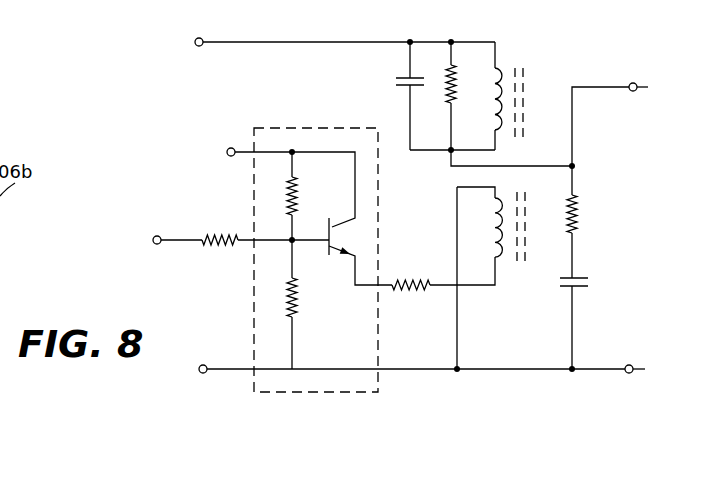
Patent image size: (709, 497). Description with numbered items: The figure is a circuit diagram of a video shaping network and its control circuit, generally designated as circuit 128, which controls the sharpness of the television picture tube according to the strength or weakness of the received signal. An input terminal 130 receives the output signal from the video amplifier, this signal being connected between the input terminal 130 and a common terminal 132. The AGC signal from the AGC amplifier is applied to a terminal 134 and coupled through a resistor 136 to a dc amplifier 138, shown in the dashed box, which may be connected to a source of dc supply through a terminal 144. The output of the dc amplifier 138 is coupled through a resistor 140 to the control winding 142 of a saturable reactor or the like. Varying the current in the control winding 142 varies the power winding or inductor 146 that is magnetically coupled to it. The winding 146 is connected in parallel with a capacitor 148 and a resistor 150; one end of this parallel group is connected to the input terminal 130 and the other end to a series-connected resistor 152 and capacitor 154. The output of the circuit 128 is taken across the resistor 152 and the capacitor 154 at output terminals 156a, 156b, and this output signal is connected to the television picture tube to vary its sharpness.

The circuit 128 is at (568, 67).
The input terminal 130 is at (199, 38).
The common terminal 132 is at (202, 364).
The terminal 134 is at (158, 247).
The resistor 136 is at (218, 234).
The dc amplifier 138 is at (378, 316).
The resistor 140 is at (400, 279).
The control winding 142 is at (498, 262).
The terminal 144 is at (227, 152).
The power winding 146 is at (495, 68).
The capacitor 148 is at (393, 83).
The resistor 150 is at (467, 74).
The resistor 152 is at (576, 218).
The capacitor 154 is at (584, 290).
The output terminal 156a is at (664, 86).
The output terminal 156b is at (663, 370).